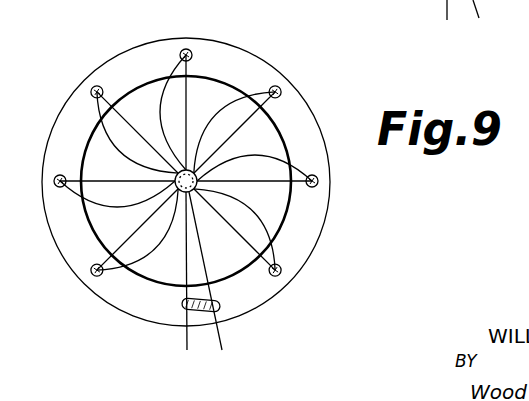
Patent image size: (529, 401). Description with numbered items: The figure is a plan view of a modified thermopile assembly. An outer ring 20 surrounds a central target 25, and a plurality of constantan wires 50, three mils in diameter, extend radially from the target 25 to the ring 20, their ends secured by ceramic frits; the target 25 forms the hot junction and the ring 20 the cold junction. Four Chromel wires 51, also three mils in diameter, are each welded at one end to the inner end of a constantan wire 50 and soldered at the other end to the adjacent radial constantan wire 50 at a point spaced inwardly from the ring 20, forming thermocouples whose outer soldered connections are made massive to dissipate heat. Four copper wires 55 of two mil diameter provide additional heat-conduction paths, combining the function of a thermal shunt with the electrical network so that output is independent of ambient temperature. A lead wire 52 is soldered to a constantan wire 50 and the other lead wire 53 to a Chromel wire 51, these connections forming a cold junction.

The ring 20 is at (267, 65).
The target 25 is at (175, 187).
The constantan wires 50 is at (187, 123).
The Chromel wires 51 is at (232, 100).
The copper wires 55 is at (162, 92).
The lead wire 52 is at (222, 333).
The lead wire 53 is at (186, 332).